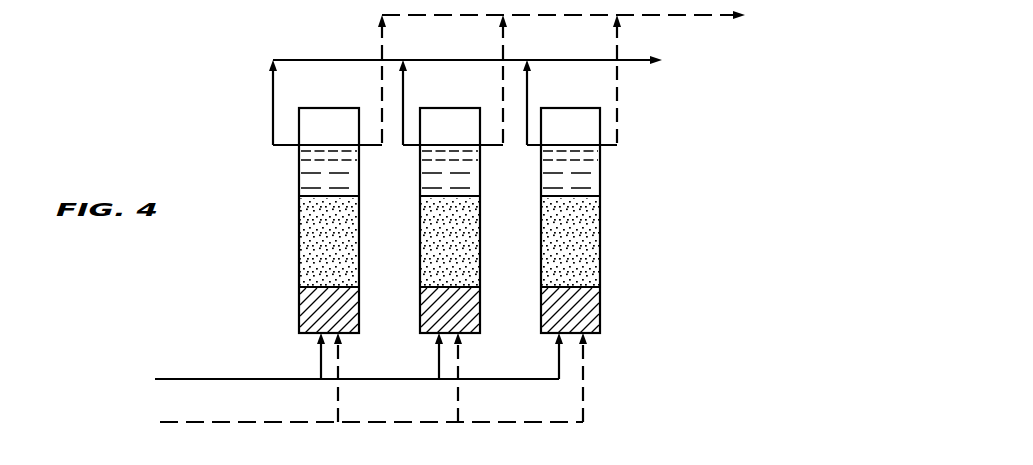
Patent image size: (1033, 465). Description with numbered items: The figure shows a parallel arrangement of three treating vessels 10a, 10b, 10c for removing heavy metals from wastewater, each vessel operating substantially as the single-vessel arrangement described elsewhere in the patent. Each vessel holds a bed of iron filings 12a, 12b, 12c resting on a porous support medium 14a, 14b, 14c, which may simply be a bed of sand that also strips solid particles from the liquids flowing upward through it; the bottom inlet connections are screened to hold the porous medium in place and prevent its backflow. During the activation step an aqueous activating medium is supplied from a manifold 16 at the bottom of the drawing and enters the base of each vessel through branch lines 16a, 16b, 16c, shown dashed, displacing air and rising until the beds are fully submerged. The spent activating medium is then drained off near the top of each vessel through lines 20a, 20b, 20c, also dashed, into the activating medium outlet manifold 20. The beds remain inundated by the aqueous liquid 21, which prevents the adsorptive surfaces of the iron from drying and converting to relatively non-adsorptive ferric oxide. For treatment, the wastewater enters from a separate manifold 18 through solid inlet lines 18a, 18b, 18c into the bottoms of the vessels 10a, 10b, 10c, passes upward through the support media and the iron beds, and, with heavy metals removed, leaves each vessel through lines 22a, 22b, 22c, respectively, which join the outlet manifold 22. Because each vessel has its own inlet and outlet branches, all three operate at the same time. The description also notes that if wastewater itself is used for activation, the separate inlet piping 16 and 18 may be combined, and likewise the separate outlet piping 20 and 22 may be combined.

The treating vessel 10a is at (359, 216).
The treating vessel 10b is at (480, 216).
The treating vessel 10c is at (600, 216).
The bed of iron filings 12a is at (300, 250).
The bed of iron filings 12b is at (420, 250).
The bed of iron filings 12c is at (541, 252).
The porous support medium 14a is at (300, 302).
The porous support medium 14b is at (420, 302).
The porous support medium 14c is at (541, 303).
The activating medium inlet manifold 16 is at (215, 424).
The activating medium inlet line 16a is at (338, 398).
The activating medium inlet line 16b is at (458, 398).
The activating medium inlet line 16c is at (583, 398).
The wastewater inlet manifold 18 is at (200, 380).
The wastewater inlet line 18a is at (321, 357).
The wastewater inlet line 18b is at (439, 357).
The wastewater inlet line 18c is at (559, 357).
The activating medium outlet manifold 20 is at (552, 15).
The activating medium outlet line 20a is at (382, 80).
The activating medium outlet line 20b is at (503, 100).
The activating medium outlet line 20c is at (617, 100).
The aqueous liquid 21 is at (300, 168).
The wastewater outlet manifold 22 is at (420, 60).
The treated wastewater outlet line 22a is at (273, 98).
The treated wastewater outlet line 22b is at (403, 95).
The treated wastewater outlet line 22c is at (527, 92).